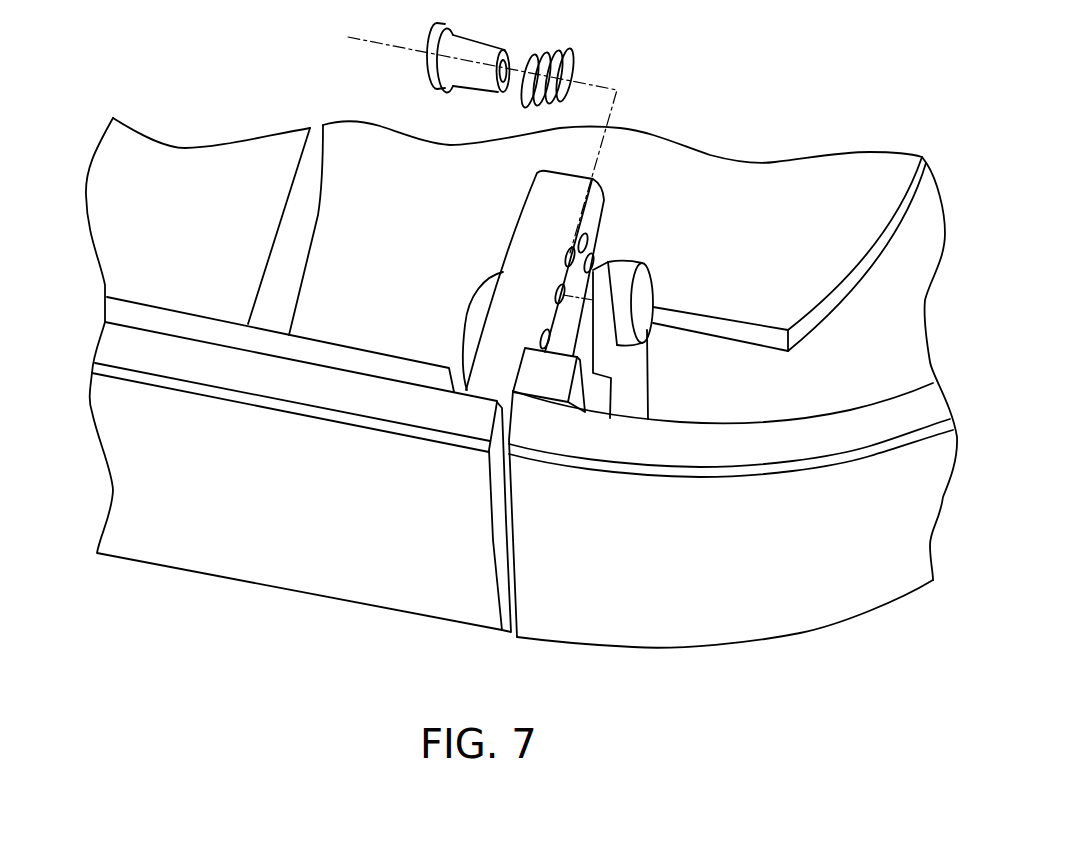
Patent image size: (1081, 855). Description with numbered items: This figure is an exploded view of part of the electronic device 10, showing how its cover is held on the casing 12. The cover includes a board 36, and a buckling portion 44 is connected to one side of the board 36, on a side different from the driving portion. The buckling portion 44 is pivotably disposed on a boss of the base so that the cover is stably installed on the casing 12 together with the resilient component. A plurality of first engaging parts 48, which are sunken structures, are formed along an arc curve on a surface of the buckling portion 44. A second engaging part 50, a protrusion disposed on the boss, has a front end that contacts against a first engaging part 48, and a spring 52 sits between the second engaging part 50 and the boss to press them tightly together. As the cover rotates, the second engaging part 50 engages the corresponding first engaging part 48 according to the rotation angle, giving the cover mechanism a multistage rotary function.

The electronic device 10 is at (946, 83).
The casing 12 is at (820, 603).
The board 36 is at (230, 532).
The buckling portion 44 is at (524, 234).
The first engaging parts 48 is at (595, 246).
The second engaging part 50 is at (477, 42).
The spring 52 is at (567, 60).